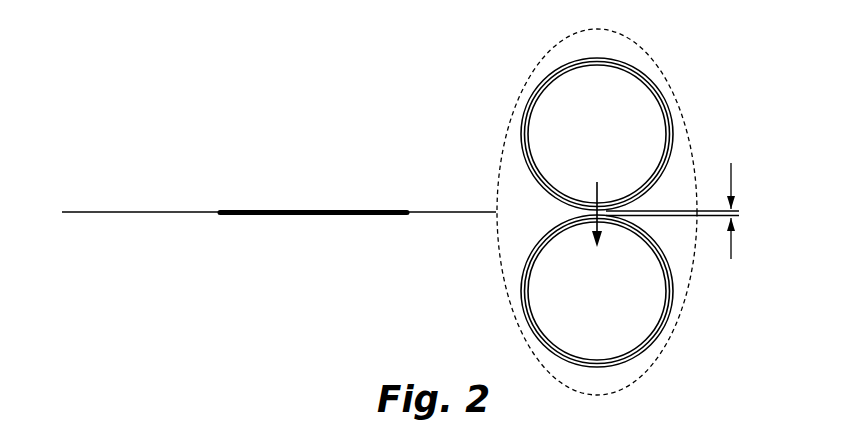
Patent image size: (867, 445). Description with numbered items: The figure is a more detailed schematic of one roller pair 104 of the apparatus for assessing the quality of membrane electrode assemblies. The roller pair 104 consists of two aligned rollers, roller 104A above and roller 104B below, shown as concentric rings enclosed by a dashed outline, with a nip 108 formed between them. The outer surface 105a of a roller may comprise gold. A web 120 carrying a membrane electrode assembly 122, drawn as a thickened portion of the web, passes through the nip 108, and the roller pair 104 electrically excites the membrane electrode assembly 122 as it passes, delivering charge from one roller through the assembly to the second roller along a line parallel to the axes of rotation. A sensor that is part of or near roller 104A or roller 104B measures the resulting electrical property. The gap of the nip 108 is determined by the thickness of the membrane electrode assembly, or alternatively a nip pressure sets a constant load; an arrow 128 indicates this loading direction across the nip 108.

The roller pair 104 is at (530, 62).
The roller 104A is at (629, 131).
The roller 104B is at (628, 302).
The outer surface 105a is at (652, 78).
The nip 108 is at (731, 172).
The web 120 is at (152, 211).
The membrane electrode assembly 122 is at (319, 209).
The direction of pressure 128 is at (600, 192).